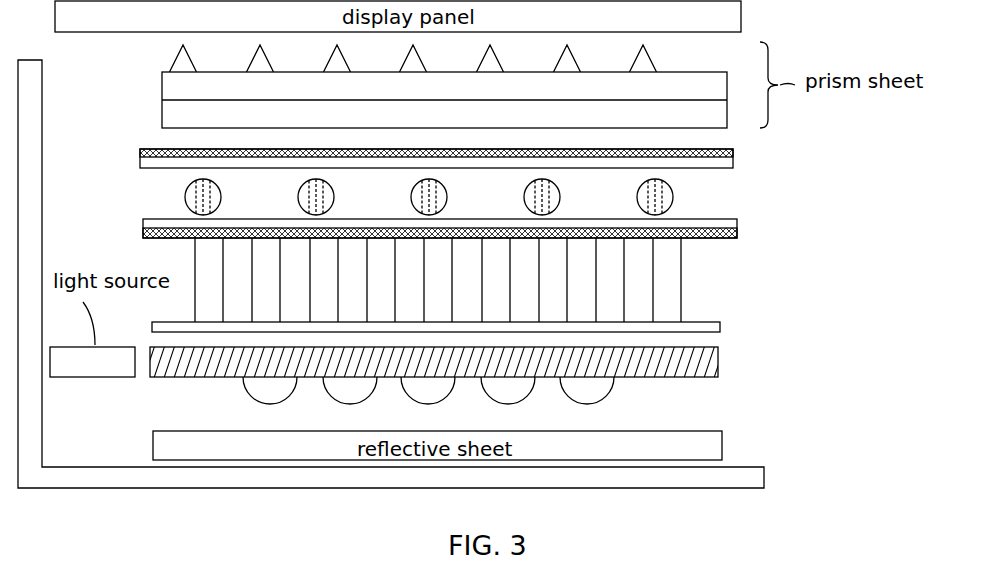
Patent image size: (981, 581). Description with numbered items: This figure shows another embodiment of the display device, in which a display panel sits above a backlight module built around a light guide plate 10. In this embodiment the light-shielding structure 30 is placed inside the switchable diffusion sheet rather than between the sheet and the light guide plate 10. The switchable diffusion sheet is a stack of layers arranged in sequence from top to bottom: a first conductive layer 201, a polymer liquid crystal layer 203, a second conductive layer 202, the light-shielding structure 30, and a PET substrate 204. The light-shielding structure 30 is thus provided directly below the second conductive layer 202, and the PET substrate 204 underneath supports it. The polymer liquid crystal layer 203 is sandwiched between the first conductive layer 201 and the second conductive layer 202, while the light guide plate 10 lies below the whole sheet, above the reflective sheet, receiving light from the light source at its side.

The light guide plate 10 is at (720, 362).
The light-shielding structure 30 is at (662, 298).
The first conductive layer 201 is at (740, 150).
The second conductive layer 202 is at (765, 218).
The polymer liquid crystal layer 203 is at (690, 201).
The PET substrate 204 is at (670, 327).